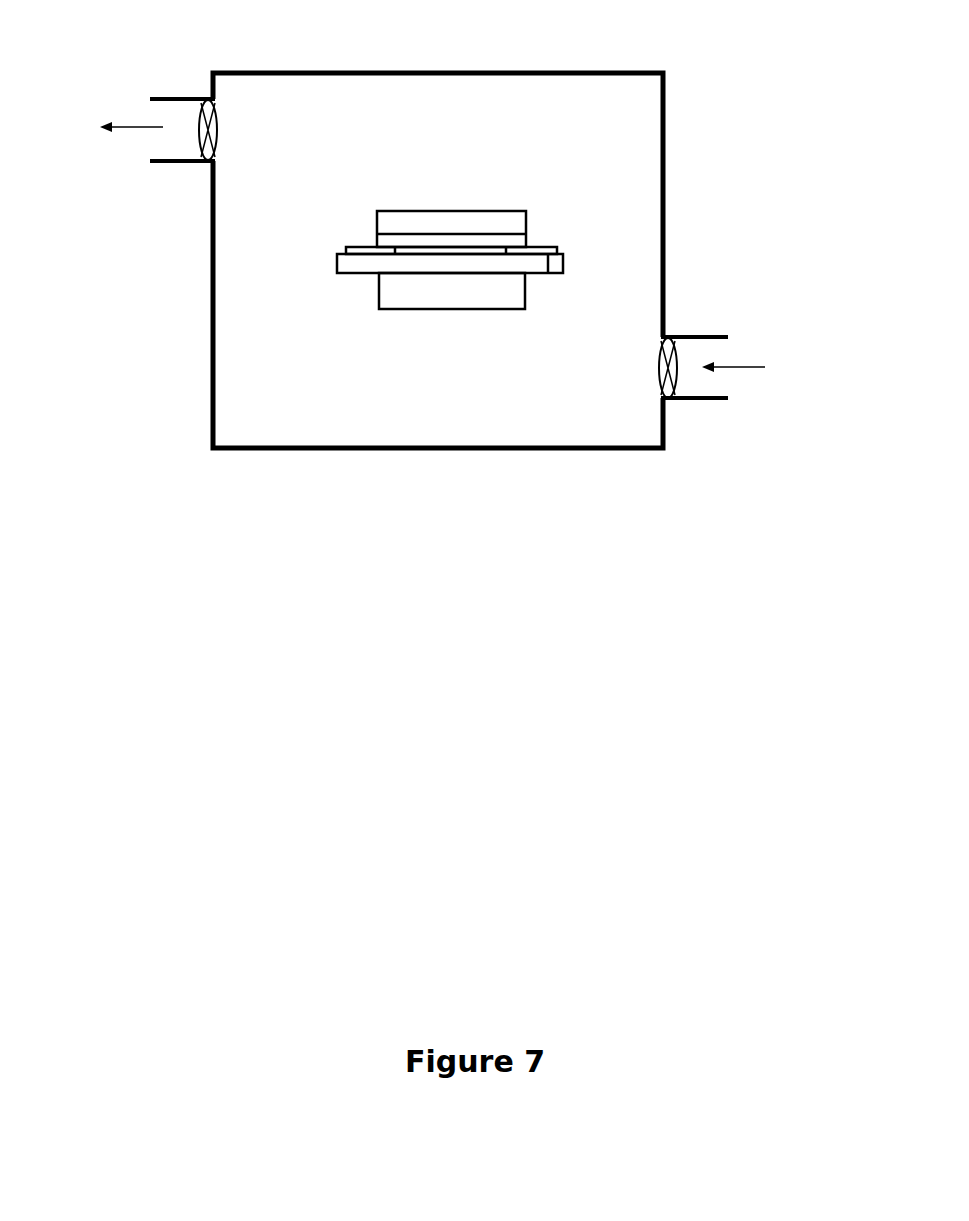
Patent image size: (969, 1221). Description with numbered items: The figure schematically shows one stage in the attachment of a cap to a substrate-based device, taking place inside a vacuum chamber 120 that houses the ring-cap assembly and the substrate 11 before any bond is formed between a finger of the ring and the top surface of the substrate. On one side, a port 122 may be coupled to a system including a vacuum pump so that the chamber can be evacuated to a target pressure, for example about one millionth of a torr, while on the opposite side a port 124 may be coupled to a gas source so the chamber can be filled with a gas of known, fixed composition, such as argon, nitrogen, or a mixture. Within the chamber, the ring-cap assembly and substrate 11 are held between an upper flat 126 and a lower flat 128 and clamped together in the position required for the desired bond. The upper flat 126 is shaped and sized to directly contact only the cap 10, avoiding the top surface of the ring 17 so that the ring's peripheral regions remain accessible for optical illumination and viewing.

The vacuum chamber 120 is at (627, 71).
The port 122 is at (197, 97).
The port 124 is at (678, 335).
The flat 126 is at (418, 211).
The cap 10 is at (502, 244).
The substrate 11 is at (565, 260).
The ring 17 is at (548, 250).
The flat 128 is at (422, 312).